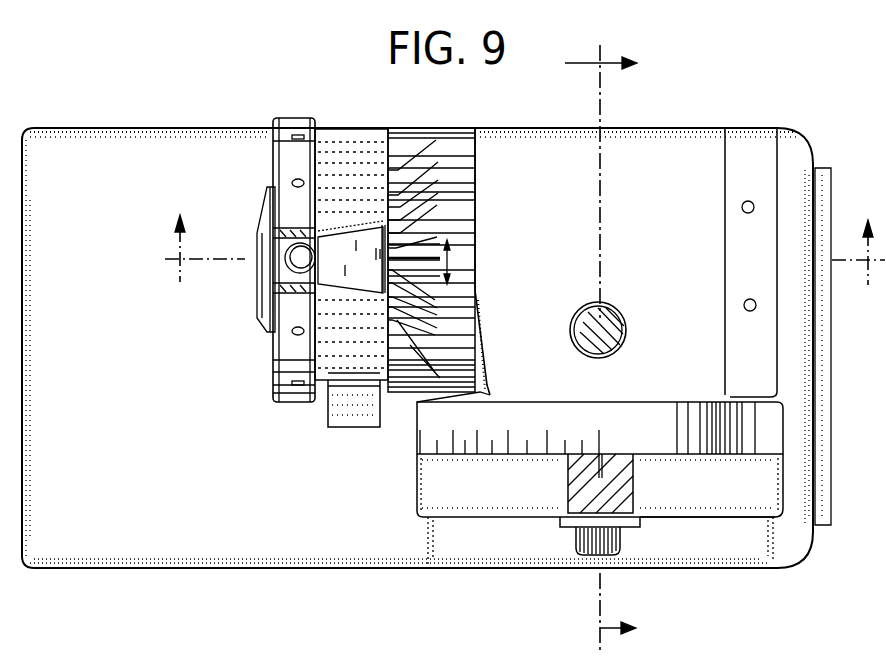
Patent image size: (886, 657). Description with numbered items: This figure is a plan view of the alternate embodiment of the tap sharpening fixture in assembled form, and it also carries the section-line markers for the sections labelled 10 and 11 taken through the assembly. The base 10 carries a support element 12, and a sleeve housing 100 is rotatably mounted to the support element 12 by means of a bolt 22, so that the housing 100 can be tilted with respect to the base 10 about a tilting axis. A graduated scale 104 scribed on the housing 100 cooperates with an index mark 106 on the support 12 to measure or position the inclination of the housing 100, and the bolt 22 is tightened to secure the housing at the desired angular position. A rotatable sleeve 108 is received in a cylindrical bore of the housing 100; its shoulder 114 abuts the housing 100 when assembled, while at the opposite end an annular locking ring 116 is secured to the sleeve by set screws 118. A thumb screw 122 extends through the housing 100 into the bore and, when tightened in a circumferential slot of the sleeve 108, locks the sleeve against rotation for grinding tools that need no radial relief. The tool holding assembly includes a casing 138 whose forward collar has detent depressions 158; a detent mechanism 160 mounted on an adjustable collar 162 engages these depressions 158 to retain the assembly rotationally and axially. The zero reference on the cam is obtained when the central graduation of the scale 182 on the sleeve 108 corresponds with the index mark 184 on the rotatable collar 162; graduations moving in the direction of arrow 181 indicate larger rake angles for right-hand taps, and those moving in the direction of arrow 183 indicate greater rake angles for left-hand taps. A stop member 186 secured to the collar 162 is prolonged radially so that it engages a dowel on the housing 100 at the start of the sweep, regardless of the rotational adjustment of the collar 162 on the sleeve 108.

The base 10 is at (148, 521).
The section line 11- 11 is at (588, 347).
The support element 12 is at (707, 493).
The bolt 22 is at (622, 546).
The sleeve housing 100 is at (670, 132).
The graduated scale 104 is at (571, 437).
The index mark 106 is at (603, 477).
The rotatable sleeve 108 is at (428, 128).
The shoulder 114 is at (487, 130).
The annular locking ring 116 is at (762, 130).
The set screws 118 is at (746, 300).
The thumb screw 122 is at (613, 312).
The casing 138 is at (293, 126).
The detent depressions 158 is at (293, 181).
The detent mechanism 160 is at (294, 260).
The adjustable collar 162 is at (343, 163).
The arrow 181 is at (476, 249).
The scale 182 is at (449, 250).
The arrow 183 is at (450, 282).
The index mark 184 is at (378, 253).
The stop member 186 is at (342, 404).